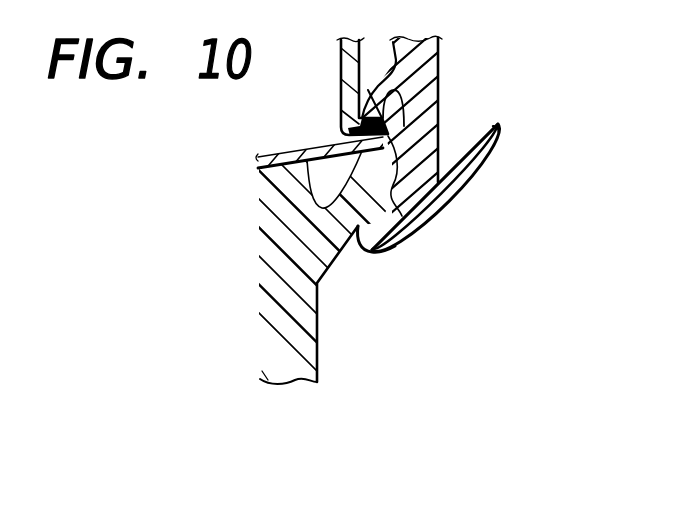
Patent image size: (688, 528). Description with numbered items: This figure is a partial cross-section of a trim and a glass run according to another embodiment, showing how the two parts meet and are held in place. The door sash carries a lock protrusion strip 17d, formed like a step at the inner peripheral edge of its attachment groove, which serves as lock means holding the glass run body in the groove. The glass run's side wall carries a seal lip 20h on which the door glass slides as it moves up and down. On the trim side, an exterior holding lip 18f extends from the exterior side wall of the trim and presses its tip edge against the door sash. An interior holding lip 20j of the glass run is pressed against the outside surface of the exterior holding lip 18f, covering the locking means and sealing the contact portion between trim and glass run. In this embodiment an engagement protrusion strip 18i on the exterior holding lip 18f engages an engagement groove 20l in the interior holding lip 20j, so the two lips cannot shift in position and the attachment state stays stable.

The lock protrusion strip 17d is at (398, 117).
The seal lip 20h is at (499, 130).
The exterior holding lip 18f is at (397, 208).
The engagement protrusion strip 18i is at (436, 226).
The engagement groove 20l is at (405, 250).
The interior holding lip 20j is at (368, 252).